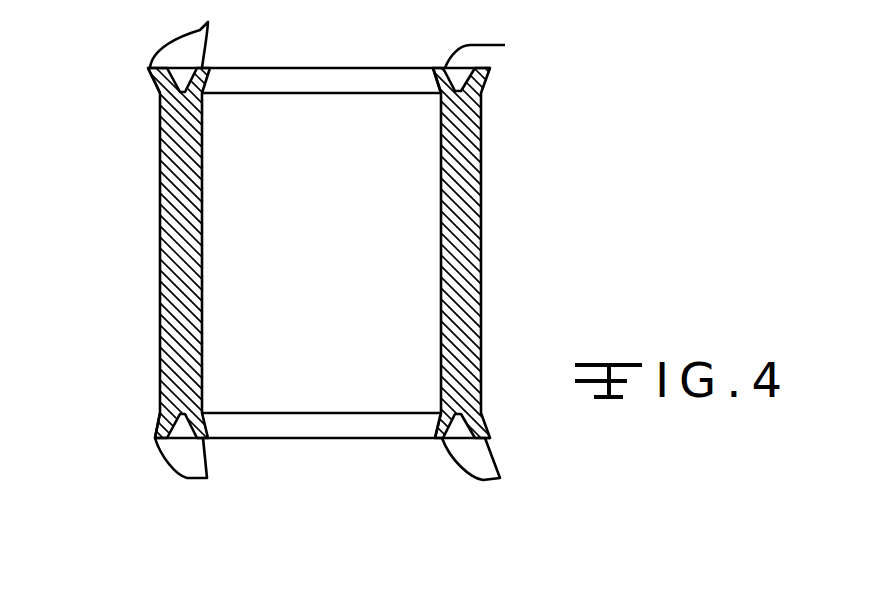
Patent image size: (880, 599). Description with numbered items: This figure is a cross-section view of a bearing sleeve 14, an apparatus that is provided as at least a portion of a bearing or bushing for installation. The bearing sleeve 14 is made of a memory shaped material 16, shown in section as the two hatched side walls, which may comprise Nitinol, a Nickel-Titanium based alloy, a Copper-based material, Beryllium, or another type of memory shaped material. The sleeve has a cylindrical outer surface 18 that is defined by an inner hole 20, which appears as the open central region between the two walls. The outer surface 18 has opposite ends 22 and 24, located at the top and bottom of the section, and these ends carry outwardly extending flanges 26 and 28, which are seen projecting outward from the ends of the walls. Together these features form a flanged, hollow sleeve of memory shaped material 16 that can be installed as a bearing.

The bearing sleeve 14 is at (508, 155).
The memory shaped material 16 is at (482, 320).
The cylindrical outer surface 18 is at (160, 236).
The inner hole 20 is at (338, 112).
The end of outer surface 22 is at (150, 67).
The end of outer surface 24 is at (150, 438).
The outwardly extending flange 26 is at (518, 38).
The outwardly extending flange 28 is at (207, 478).